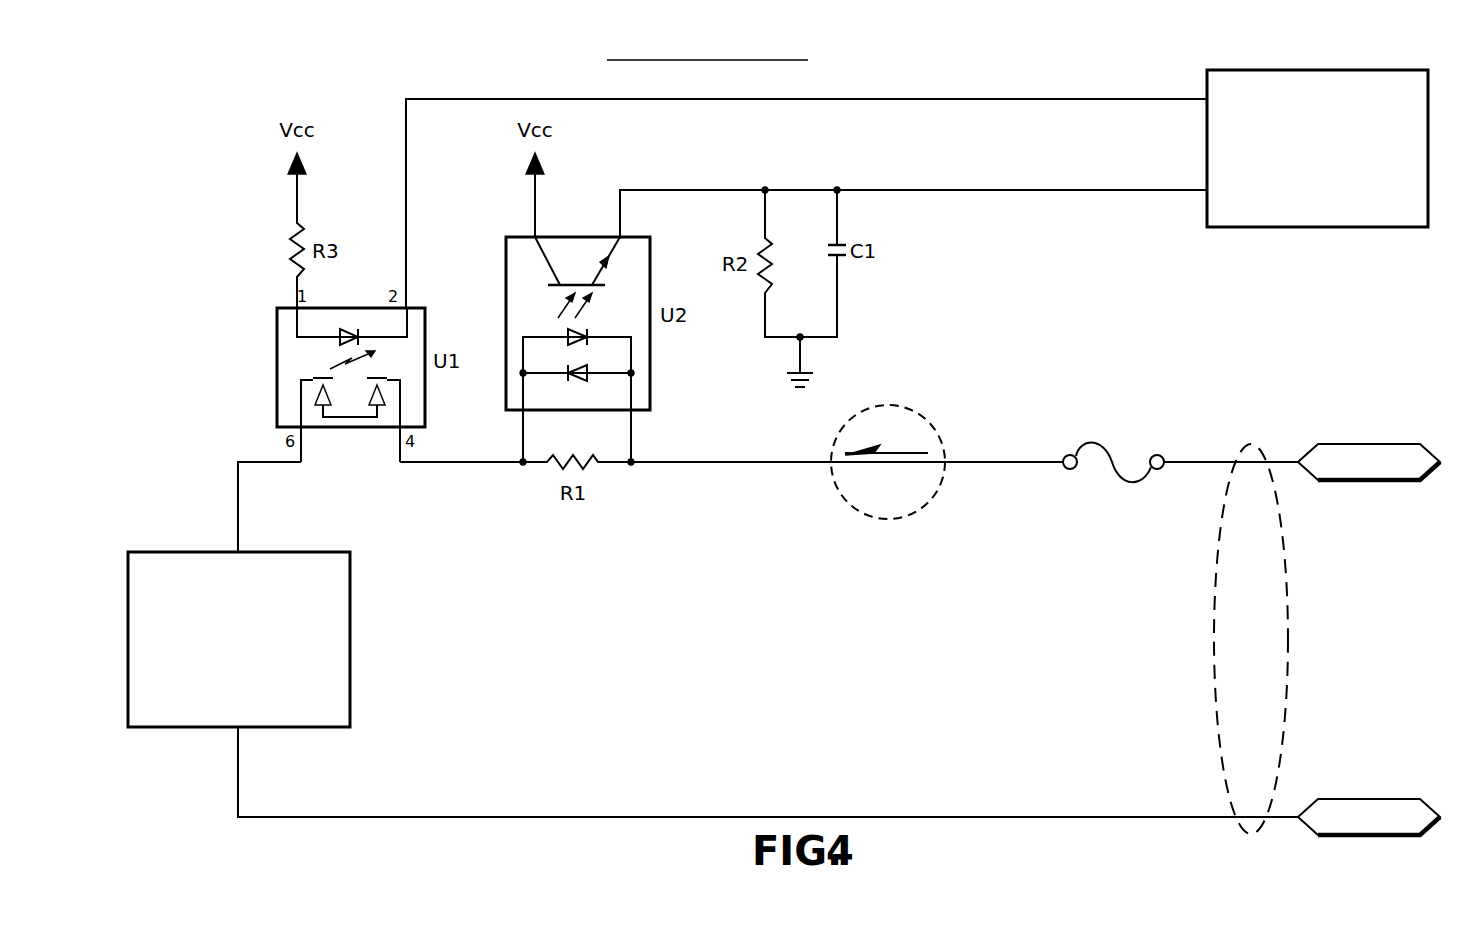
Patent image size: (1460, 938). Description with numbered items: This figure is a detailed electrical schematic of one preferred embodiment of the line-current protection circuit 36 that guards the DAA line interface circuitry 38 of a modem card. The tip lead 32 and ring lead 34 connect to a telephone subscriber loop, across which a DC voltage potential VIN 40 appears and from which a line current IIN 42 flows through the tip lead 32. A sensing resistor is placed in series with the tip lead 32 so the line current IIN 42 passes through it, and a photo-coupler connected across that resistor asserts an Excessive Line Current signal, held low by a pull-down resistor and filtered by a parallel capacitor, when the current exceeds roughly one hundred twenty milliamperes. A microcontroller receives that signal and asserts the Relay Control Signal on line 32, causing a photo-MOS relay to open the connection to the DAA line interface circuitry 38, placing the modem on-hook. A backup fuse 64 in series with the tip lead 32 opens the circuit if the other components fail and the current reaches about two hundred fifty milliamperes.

The tip lead 32 is at (448, 98).
The ring lead 34 is at (1405, 810).
The protection circuit 36 is at (955, 80).
The DAA line interface circuitry 38 is at (328, 595).
The DC voltage potential VIN 40 is at (1215, 677).
The line current IIN 42 is at (927, 420).
The fuse 64 is at (1113, 473).